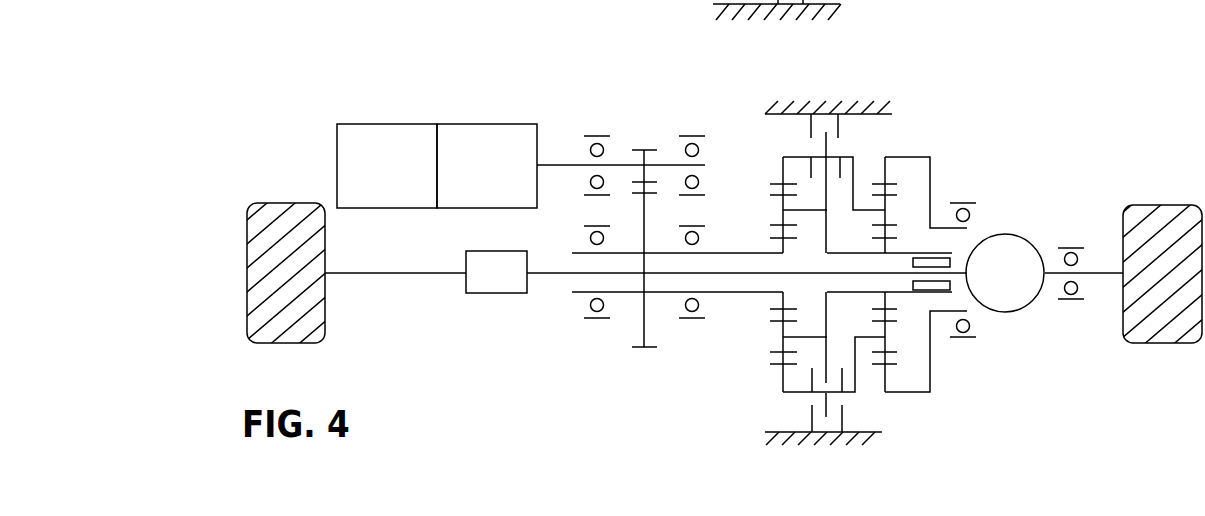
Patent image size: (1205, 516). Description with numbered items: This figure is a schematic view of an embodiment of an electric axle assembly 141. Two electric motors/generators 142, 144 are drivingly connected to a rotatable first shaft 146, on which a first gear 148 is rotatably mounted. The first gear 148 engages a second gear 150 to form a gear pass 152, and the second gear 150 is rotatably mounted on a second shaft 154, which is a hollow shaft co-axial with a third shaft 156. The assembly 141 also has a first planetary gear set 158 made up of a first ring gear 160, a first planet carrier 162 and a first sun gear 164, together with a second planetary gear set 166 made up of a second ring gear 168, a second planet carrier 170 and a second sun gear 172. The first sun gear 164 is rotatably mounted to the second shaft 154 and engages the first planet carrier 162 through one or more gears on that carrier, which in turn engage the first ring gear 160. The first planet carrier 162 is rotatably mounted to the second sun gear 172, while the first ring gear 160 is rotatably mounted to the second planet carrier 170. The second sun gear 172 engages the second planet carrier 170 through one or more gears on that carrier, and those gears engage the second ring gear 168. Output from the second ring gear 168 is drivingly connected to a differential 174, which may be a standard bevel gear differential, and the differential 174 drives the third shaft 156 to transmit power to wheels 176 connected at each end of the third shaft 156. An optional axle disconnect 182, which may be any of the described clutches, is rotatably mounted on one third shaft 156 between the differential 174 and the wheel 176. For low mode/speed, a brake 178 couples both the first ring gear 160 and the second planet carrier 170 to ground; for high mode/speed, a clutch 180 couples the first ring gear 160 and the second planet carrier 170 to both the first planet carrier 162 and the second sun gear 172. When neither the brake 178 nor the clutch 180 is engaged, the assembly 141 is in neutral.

The electric axle assembly 141 is at (562, 42).
The electric motor/generator 142 is at (387, 139).
The electric motor/generator 144 is at (487, 139).
The first shaft 146 is at (621, 140).
The first gear 148 is at (638, 223).
The second gear 150 is at (626, 364).
The gear pass 152 is at (605, 204).
The second shaft 154 is at (663, 302).
The third shaft 156 is at (724, 302).
The first planetary gear set 158 is at (748, 347).
The first ring gear 160 is at (807, 189).
The first planet carrier 162 is at (839, 342).
The first sun gear 164 is at (798, 342).
The second planetary gear set 166 is at (867, 248).
The second ring gear 168 is at (930, 191).
The second planet carrier 170 is at (922, 189).
The second sun gear 172 is at (898, 220).
The differential 174 is at (1007, 250).
The wheel 176 is at (722, 278).
The brake 178 is at (828, 95).
The clutch 180 is at (862, 251).
The axle disconnect 182 is at (494, 302).